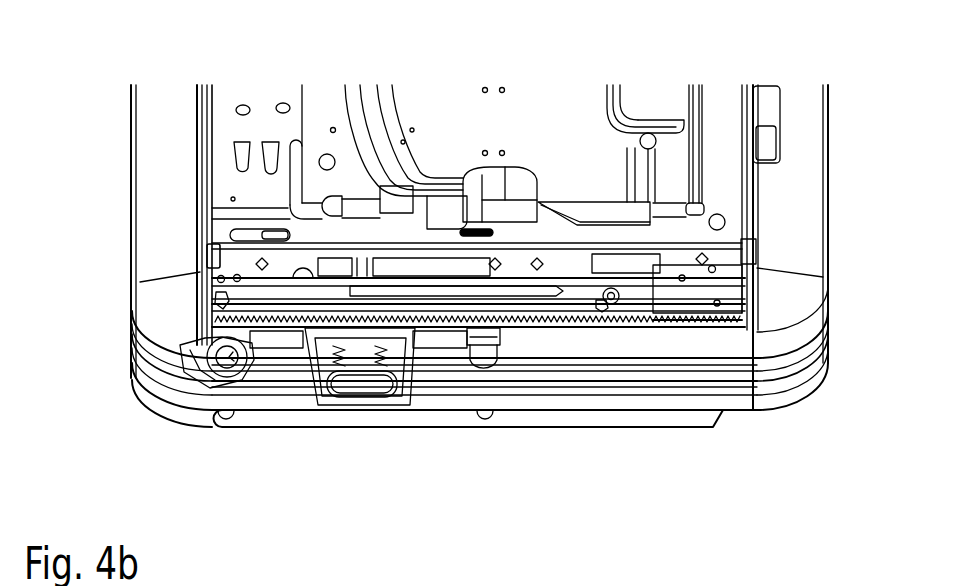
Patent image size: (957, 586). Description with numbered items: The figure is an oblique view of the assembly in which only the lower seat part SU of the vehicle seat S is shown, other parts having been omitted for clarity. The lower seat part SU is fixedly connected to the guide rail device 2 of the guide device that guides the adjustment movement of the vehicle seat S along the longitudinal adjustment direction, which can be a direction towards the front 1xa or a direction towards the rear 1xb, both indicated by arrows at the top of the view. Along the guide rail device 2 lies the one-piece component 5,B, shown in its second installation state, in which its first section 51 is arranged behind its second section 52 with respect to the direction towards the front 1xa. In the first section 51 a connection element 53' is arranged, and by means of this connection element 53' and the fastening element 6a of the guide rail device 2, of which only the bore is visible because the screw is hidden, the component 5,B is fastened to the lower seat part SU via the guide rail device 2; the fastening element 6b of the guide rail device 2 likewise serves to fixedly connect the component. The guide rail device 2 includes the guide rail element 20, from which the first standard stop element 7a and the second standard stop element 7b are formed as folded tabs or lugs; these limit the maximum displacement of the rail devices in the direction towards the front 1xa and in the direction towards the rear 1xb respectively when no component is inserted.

The guide rail device 2 is at (848, 346).
The vehicle seat S is at (104, 137).
The lower seat part SU is at (104, 273).
The first standard stop element 7a is at (200, 273).
The fastening element 6a is at (217, 293).
The connection element 53' is at (185, 379).
The first section 51 is at (277, 330).
The component in second installation state 5,B is at (437, 290).
The second section 52 is at (553, 322).
The second standard stop element 7b is at (602, 318).
The guide rail element 20 is at (618, 304).
The fastening element 6b is at (625, 300).
The first adjustment direction 1xa is at (440, 29).
The second adjustment direction 1xb is at (515, 29).